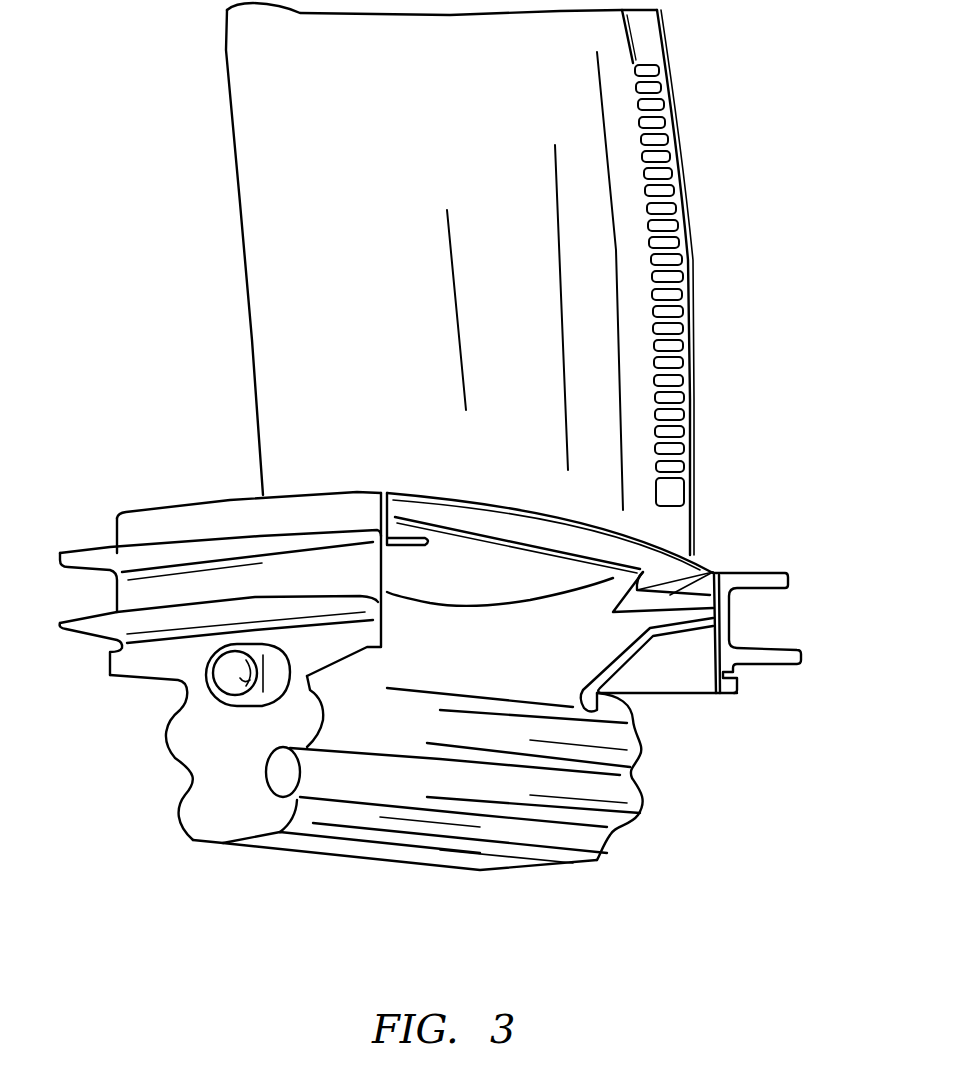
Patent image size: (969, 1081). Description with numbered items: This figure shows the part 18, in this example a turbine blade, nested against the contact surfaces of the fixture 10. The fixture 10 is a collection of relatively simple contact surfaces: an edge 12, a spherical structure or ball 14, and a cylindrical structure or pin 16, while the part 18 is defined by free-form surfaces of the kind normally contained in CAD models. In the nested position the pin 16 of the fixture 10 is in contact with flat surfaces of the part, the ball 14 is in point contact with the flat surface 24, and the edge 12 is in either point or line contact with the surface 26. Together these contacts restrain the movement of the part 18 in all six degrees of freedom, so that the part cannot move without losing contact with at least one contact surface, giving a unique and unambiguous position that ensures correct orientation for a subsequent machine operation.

The fixture 10 is at (672, 864).
The edge 12 is at (226, 50).
The spherical structure 14 is at (235, 672).
The cylindrical structure 16 is at (617, 795).
The part 18 is at (133, 332).
The flat surface 24 is at (277, 681).
The surface 26 is at (240, 203).